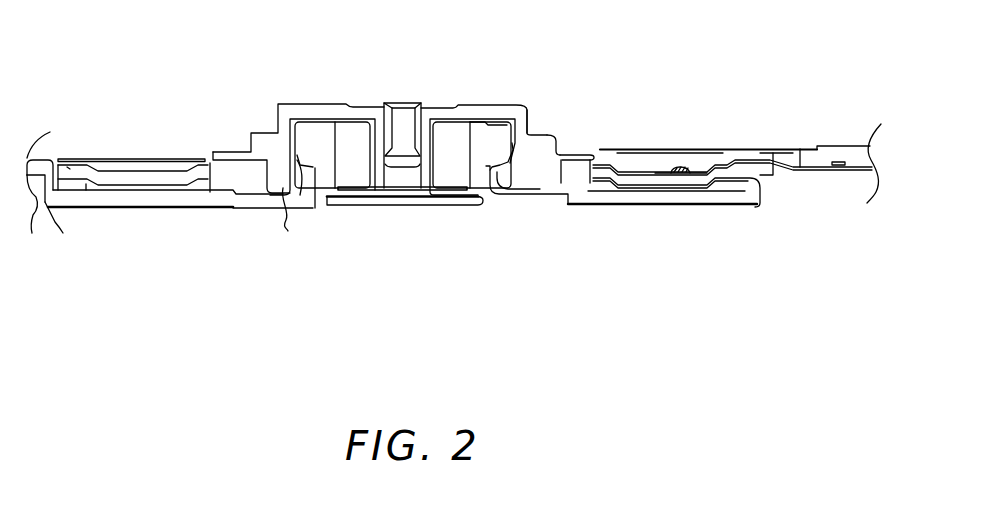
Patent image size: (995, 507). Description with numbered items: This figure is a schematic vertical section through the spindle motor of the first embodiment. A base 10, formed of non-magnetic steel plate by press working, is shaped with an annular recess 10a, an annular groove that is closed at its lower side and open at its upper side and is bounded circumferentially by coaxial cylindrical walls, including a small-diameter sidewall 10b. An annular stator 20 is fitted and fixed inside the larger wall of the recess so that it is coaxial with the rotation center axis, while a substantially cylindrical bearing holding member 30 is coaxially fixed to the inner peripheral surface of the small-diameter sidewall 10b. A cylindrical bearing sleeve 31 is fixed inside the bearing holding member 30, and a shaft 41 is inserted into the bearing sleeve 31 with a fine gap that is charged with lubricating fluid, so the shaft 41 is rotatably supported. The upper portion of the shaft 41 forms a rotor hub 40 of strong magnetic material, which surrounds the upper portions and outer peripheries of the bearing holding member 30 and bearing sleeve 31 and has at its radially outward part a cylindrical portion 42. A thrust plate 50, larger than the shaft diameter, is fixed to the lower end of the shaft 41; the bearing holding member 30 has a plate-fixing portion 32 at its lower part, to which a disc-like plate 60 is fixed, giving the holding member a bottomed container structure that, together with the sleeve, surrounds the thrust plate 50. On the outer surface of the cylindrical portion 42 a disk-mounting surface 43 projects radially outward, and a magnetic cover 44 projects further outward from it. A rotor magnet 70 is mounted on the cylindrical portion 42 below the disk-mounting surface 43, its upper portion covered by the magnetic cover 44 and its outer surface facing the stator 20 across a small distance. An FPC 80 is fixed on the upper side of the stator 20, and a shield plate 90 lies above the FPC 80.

The base 10 is at (42, 155).
The annular recess 10a is at (53, 206).
The small-diameter sidewall 10b is at (303, 173).
The stator 20 is at (200, 152).
The bearing holding member 30 is at (323, 173).
The bearing sleeve 31 is at (352, 143).
The plate-fixing portion 32 is at (483, 198).
The rotor hub 40 is at (303, 90).
The shaft 41 is at (425, 135).
The cylindrical portion 42 is at (528, 108).
The disk-mounting surface 43 is at (542, 133).
The magnetic cover 44 is at (578, 152).
The thrust plate 50 is at (397, 191).
The plate 60 is at (455, 206).
The rotor magnet 70 is at (558, 175).
The FPC 80 is at (661, 172).
The shield plate 90 is at (647, 150).